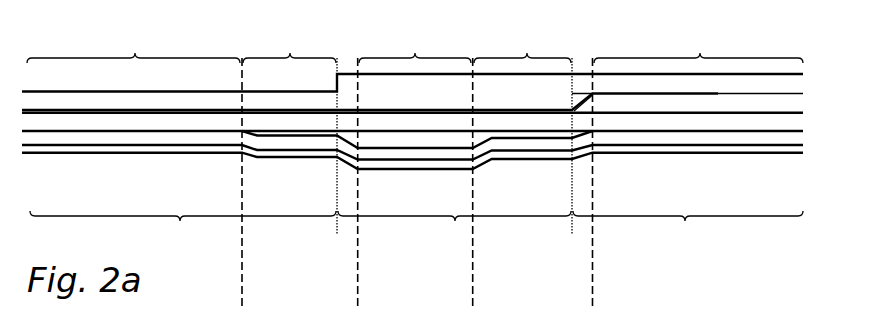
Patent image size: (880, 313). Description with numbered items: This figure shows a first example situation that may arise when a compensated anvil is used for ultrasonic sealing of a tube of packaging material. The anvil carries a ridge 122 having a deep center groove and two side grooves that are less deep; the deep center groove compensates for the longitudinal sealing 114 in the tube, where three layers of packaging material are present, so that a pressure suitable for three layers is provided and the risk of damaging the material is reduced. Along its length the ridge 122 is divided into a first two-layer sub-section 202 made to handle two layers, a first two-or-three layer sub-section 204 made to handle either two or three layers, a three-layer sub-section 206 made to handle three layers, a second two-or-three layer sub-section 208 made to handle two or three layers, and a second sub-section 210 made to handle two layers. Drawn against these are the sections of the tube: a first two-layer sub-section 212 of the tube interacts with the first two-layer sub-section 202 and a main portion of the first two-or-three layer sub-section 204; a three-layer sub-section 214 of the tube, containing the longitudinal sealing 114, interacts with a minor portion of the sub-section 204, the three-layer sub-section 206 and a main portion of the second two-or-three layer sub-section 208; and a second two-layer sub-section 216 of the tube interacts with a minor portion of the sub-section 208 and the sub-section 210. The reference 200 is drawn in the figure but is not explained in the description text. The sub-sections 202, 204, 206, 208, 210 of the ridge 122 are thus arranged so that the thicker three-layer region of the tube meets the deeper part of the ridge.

The longitudinal sealing 114 is at (380, 88).
The ridge 122 is at (173, 138).
The output signal line 200 is at (623, 92).
The first two-layer sub-section 202 is at (133, 45).
The first two-or-three layer sub-section 204 is at (289, 45).
The three-layer sub-section 206 is at (415, 45).
The second two-or-three layer sub-section 208 is at (522, 45).
The second three layer sub-section 210 is at (698, 45).
The first two-layer sub-section of the tube 212 is at (183, 229).
The three-layer sub-section of the tube 214 is at (454, 230).
The second two-layer sub-section of the tube 216 is at (688, 230).